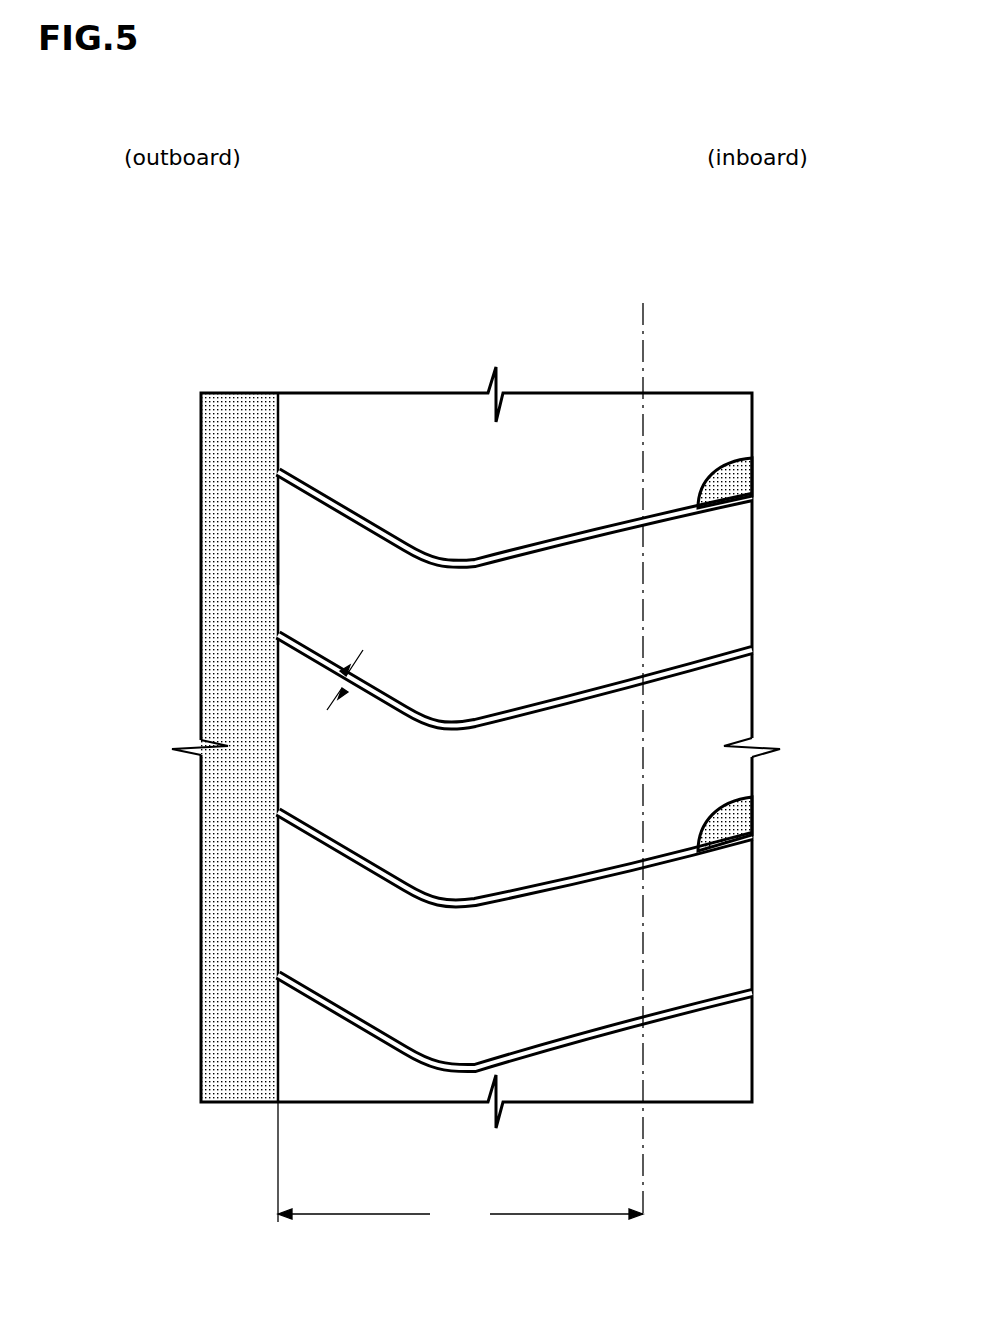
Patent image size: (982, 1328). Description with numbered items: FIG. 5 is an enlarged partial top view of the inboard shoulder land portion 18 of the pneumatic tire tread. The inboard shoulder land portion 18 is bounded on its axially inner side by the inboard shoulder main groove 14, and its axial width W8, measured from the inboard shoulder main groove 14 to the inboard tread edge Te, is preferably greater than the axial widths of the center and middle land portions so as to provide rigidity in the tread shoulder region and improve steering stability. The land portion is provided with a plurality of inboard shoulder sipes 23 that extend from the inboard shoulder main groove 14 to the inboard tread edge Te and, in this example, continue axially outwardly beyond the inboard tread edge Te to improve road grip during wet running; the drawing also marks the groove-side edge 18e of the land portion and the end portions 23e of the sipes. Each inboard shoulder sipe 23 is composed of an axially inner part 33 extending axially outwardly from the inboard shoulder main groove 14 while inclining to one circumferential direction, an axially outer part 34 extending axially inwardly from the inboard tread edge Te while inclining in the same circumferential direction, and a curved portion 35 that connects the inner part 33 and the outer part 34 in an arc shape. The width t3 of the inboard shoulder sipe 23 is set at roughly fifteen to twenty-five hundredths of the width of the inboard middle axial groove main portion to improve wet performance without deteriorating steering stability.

The inboard shoulder main groove 14 is at (248, 436).
The inboard shoulder land portion 18 is at (425, 436).
The inner surface of tread 18e is at (276, 560).
The inboard shoulder sipe 23 is at (440, 568).
The groove end portion 23e is at (698, 506).
The axially inner part 33 is at (340, 862).
The axially outer part 34 is at (560, 893).
The curved portion 35 is at (443, 908).
The width of the inboard shoulder sipe t3 is at (345, 677).
The tread edge Te is at (642, 746).
The axial width of the inboard shoulder land portion W8 is at (460, 1165).